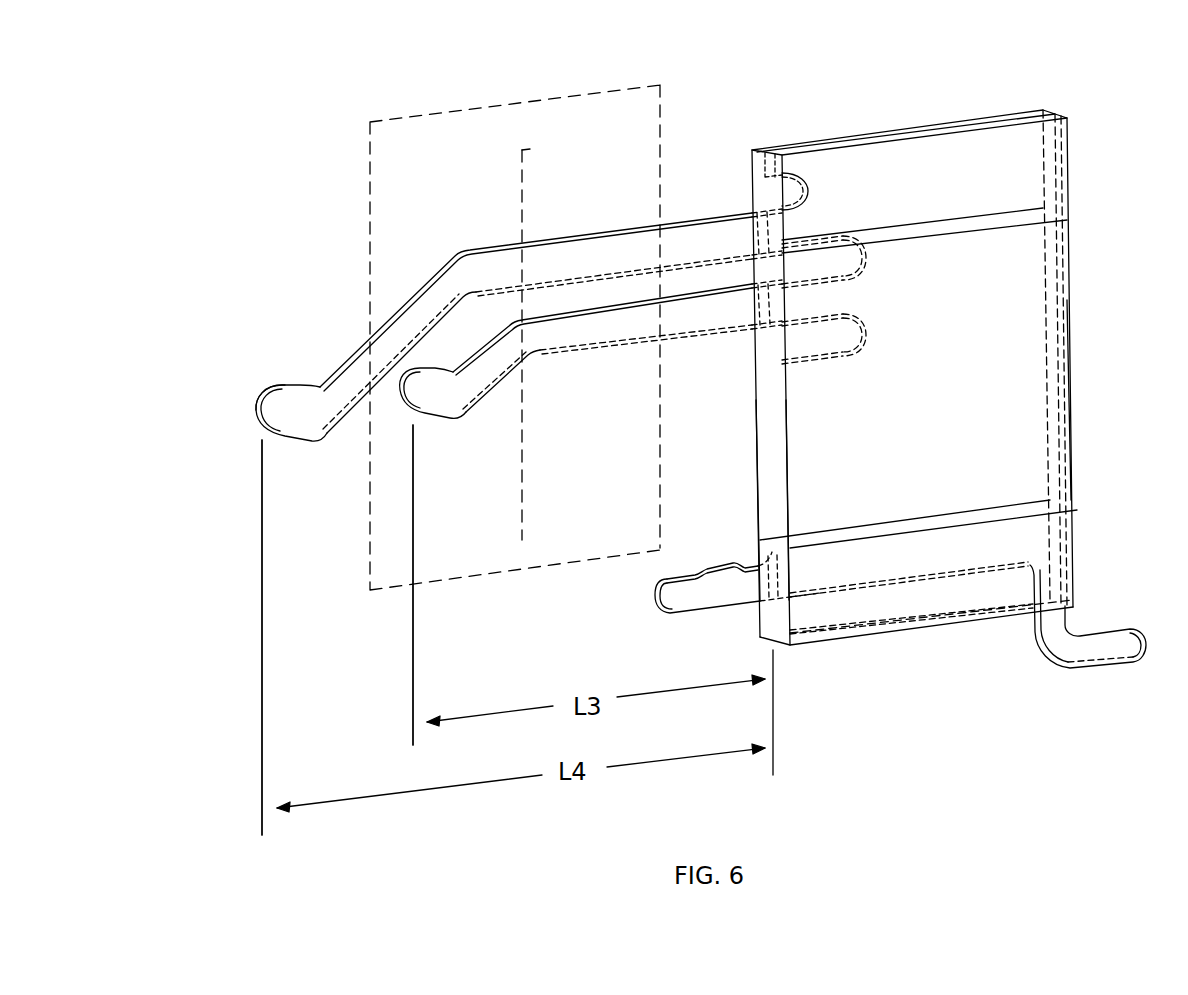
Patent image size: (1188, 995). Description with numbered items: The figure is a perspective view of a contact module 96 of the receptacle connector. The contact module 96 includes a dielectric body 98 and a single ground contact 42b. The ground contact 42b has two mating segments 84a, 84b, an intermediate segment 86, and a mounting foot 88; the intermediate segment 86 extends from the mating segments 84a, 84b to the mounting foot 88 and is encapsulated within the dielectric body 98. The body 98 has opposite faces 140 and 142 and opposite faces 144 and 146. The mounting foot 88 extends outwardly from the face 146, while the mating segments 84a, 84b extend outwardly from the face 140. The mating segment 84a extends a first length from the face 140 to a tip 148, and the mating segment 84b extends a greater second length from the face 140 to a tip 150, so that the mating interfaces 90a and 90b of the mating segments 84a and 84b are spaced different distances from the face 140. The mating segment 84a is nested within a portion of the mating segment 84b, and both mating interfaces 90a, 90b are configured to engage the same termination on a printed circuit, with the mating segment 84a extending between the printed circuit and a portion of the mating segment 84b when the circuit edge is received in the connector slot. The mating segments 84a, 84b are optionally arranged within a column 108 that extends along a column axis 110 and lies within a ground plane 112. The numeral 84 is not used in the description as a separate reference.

The contact module 96 is at (1114, 92).
The face 144 is at (1010, 117).
The ground contact 42b is at (1022, 287).
The dielectric body 98 is at (1027, 332).
The face 142 is at (1075, 388).
The intermediate segment 86 is at (1040, 430).
The face 140 is at (765, 457).
The face 146 is at (853, 638).
The mounting foot 88 is at (1093, 670).
The bus bar 84 is at (677, 238).
The mating segment 84b is at (552, 237).
The mating segment 84a is at (618, 352).
The mating interface 90b is at (318, 447).
The mating interface 90a is at (460, 423).
The tip 150 is at (256, 380).
The tip 148 is at (419, 426).
The column 108 is at (218, 431).
The ground plane 112 is at (645, 112).
The column axis 110 is at (524, 165).